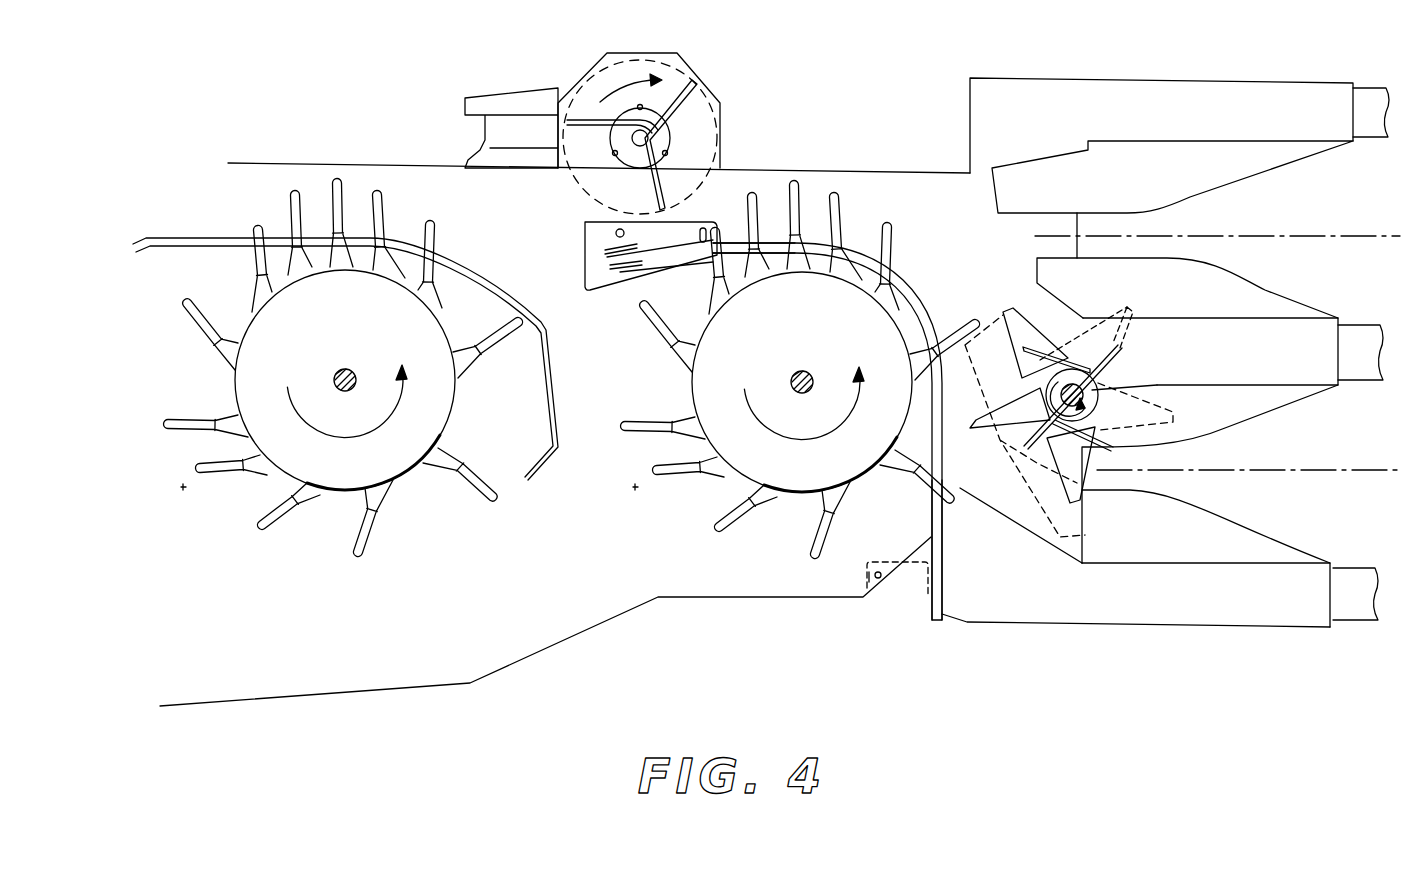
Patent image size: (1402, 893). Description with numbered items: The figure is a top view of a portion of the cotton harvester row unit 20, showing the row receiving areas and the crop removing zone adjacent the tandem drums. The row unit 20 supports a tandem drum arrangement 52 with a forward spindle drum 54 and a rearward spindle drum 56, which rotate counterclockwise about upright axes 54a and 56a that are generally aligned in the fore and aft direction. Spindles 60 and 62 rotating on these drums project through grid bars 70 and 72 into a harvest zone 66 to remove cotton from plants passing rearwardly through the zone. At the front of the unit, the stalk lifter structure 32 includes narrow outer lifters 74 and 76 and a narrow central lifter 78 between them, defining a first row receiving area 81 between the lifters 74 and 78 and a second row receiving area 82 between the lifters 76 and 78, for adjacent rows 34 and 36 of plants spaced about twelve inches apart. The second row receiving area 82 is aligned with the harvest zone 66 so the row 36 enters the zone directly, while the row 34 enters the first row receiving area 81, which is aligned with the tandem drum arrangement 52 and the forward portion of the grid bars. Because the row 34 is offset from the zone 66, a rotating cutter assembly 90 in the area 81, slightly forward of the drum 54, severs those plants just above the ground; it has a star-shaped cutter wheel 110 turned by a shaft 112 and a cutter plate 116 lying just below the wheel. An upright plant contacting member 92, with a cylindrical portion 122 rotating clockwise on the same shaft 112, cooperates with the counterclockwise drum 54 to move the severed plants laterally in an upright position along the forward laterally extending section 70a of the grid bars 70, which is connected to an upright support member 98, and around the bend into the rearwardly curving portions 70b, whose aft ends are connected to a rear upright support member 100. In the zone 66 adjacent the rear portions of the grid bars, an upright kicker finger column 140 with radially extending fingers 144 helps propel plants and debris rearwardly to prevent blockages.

The row unit 20 is at (897, 80).
The stalk lifter structure 32 is at (1350, 630).
The first row of cotton plants 34 is at (1332, 470).
The second row of cotton plants 36 is at (1337, 236).
The tandem drum arrangement 52 is at (297, 545).
The forward spindle drum 54 is at (800, 498).
The axis of forward spindle drum 54a is at (800, 368).
The rearward spindle drum 56 is at (422, 463).
The axis of rearward spindle drum 56a is at (341, 365).
The spindles of forward drum 60 is at (830, 200).
The spindles of rearward drum 62 is at (327, 200).
The harvest zone 66 is at (907, 200).
The grid bars 70 is at (920, 303).
The forward laterally extending section of grid bars 70a is at (950, 475).
The rearwardly curved portions of grid bars 70b is at (768, 240).
The grid bars 72 is at (467, 260).
The outer lifter 74 is at (1372, 565).
The outer lifter 76 is at (1368, 88).
The central lifter 78 is at (1372, 320).
The first row receiving area 81 is at (1197, 458).
The second row receiving area 82 is at (1192, 226).
The rotating cutter assembly 90 is at (1107, 409).
The upright plant contacting member 92 is at (1038, 343).
The upright support member 98 is at (925, 587).
The rear upright support member 100 is at (621, 288).
The star-shaped cutter wheel 110 is at (1125, 306).
The shaft 112 is at (1060, 370).
The cutter plate 116 is at (1100, 537).
The cylindrical portion 122 is at (1100, 392).
The kicker finger column 140 is at (698, 50).
The fingers 144 is at (605, 174).